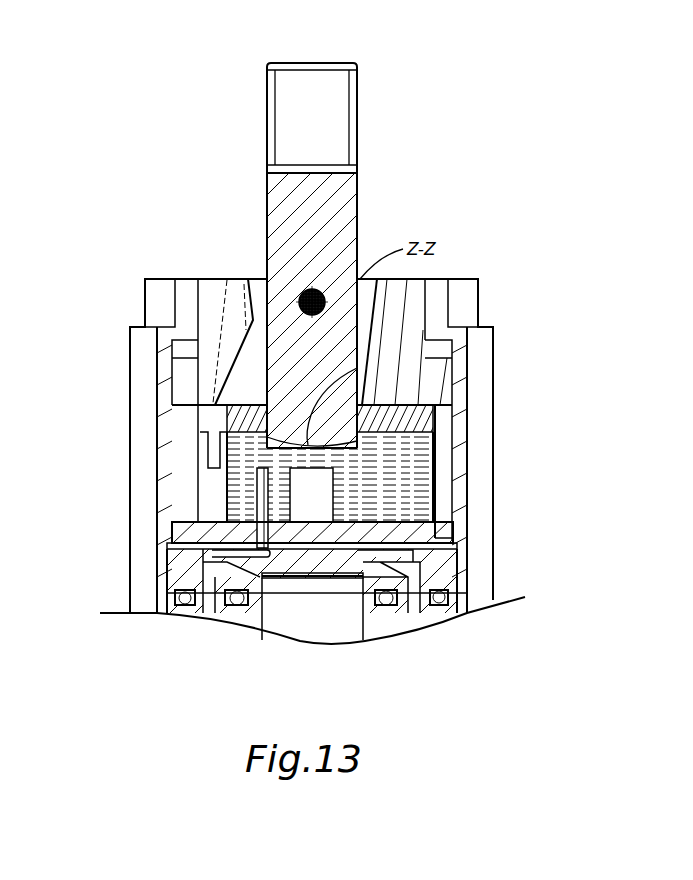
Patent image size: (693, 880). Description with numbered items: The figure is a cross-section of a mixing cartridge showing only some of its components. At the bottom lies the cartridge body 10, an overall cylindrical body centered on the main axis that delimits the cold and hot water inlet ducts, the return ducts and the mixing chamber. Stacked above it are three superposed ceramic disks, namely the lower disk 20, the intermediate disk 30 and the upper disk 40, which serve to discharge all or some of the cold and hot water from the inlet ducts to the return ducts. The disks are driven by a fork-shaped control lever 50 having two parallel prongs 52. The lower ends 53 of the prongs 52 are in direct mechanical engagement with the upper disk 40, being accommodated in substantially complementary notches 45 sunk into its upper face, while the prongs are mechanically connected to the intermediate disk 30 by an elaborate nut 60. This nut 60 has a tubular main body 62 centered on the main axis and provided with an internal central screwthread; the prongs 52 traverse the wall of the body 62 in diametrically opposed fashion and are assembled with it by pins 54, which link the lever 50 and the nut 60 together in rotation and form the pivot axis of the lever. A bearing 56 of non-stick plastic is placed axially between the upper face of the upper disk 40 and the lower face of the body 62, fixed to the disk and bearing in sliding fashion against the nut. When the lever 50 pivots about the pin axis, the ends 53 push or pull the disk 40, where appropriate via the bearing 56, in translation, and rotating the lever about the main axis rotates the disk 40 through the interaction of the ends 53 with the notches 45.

The cartridge body 10 is at (238, 614).
The lower disk 20 is at (461, 567).
The intermediate disk 30 is at (442, 528).
The upper disk 40 is at (436, 468).
The notches 45 is at (260, 437).
The control lever 50 is at (257, 97).
The prongs 52 is at (335, 205).
The lower ends of the prongs 53 is at (125, 382).
The pins 54 is at (303, 292).
The bearing 56 is at (232, 418).
The nut 60 is at (170, 312).
The main body 62 is at (187, 378).